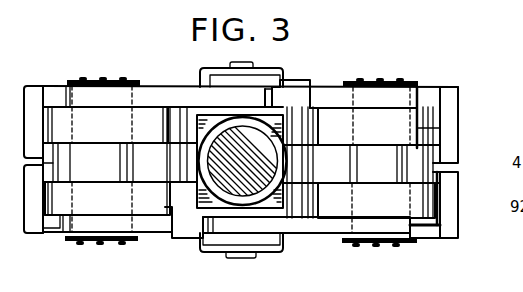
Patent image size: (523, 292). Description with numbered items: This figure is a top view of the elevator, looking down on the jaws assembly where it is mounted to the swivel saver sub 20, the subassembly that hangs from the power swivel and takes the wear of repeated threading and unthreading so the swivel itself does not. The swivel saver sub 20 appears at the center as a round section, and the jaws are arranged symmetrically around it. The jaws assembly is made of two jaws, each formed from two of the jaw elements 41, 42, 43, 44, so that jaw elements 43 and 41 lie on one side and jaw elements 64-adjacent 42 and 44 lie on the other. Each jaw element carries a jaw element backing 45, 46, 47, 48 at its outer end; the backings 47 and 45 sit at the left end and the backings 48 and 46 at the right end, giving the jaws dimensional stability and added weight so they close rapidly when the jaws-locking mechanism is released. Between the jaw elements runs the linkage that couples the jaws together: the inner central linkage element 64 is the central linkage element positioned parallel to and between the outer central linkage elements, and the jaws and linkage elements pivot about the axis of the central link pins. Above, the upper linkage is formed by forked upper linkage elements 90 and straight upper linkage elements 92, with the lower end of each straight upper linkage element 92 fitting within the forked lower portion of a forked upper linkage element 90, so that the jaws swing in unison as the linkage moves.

The swivel saver sub 20 is at (255, 172).
The jaw element 41 is at (110, 204).
The jaw element 42 is at (380, 205).
The jaw element 43 is at (95, 117).
The jaw element 44 is at (440, 128).
The jaw element backing 45 is at (33, 228).
The jaw element backing 46 is at (448, 213).
The jaw element backing 47 is at (32, 87).
The jaw element backing 48 is at (451, 102).
The inner central linkage element 64 is at (329, 147).
The forked upper linkage element 90 is at (292, 87).
The straight upper linkage element 92 is at (163, 95).